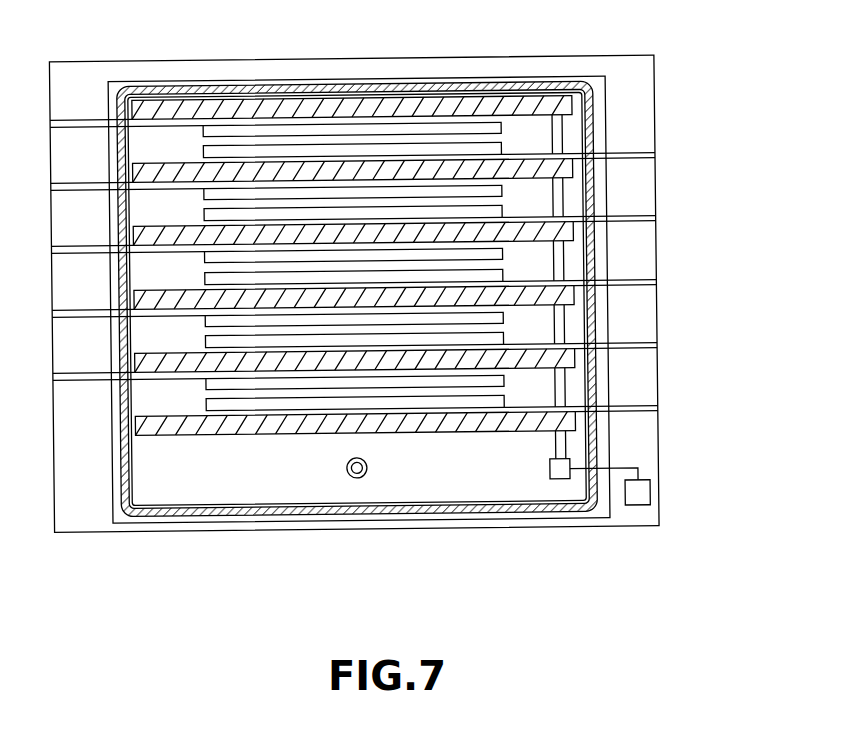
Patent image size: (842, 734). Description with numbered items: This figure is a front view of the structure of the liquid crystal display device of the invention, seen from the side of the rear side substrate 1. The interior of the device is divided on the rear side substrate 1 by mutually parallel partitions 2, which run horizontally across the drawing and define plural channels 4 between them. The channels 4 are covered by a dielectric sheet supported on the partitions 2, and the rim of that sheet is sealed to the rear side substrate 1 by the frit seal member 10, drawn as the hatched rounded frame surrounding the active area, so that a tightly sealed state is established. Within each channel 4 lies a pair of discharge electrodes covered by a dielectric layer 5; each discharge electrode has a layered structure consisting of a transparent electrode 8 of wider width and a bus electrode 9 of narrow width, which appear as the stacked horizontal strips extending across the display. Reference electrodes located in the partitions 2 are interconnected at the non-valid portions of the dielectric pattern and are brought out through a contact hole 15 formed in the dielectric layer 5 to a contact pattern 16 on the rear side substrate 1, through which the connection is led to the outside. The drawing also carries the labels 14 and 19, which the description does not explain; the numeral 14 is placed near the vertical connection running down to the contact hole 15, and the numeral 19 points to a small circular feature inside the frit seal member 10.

The rear side substrate 1 is at (642, 78).
The partition 2 is at (574, 360).
The channel 4 is at (182, 143).
The dielectric layer 5 is at (539, 137).
The transparent electrode 8 is at (489, 130).
The bus electrode 9 is at (590, 163).
The frit seal member 10 is at (495, 518).
The bus line 14 is at (564, 449).
The contact hole 15 is at (561, 482).
The contact pattern 16 is at (650, 496).
The injection hole 19 is at (354, 478).